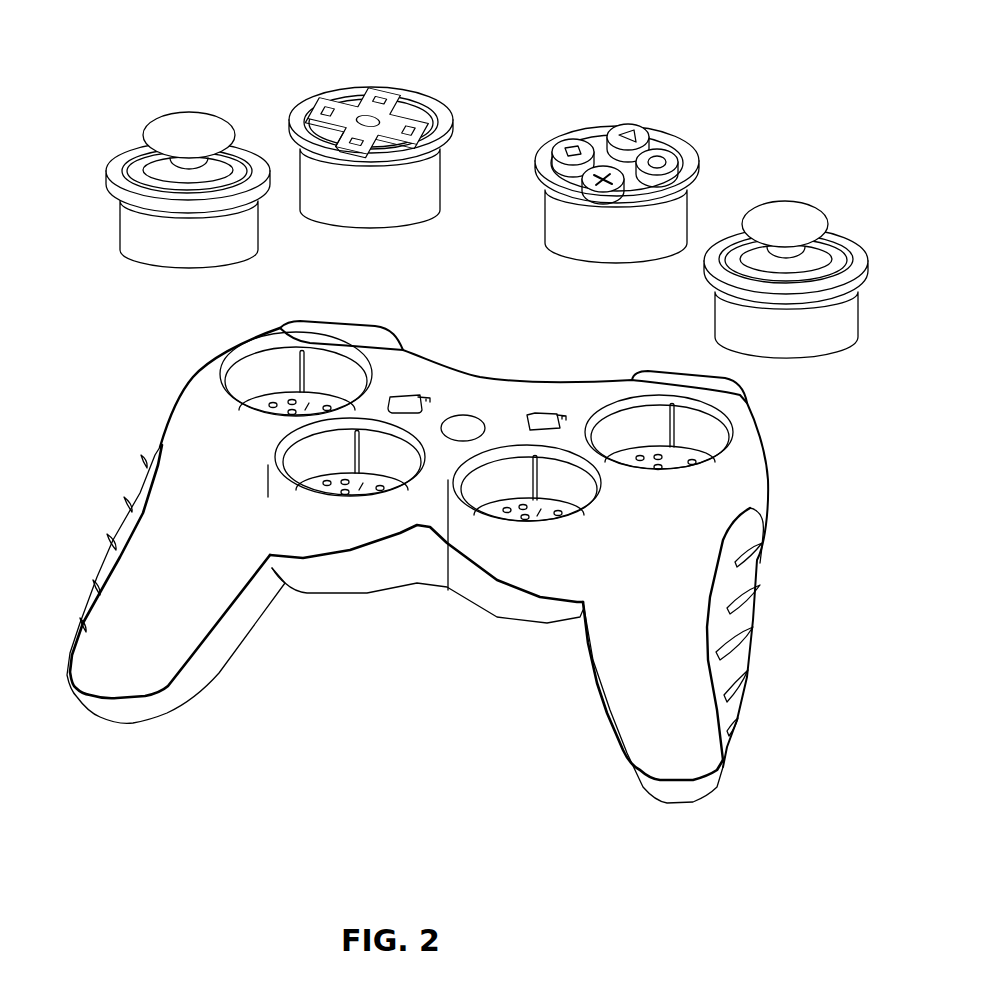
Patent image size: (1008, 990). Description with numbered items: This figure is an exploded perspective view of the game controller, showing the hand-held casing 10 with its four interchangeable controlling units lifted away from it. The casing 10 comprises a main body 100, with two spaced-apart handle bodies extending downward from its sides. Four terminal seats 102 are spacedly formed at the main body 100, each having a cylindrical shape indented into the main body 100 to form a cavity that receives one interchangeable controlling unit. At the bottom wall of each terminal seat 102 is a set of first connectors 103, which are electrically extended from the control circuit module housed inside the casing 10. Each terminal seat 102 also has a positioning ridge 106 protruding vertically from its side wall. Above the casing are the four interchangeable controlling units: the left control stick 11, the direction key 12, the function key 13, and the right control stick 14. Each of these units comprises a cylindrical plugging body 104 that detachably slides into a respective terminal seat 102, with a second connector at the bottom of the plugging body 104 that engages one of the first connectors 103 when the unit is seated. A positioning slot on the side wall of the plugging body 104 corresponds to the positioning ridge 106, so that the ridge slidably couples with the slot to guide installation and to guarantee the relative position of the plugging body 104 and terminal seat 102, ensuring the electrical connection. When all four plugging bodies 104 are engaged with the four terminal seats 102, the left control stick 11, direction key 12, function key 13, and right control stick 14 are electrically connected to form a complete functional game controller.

The casing 10 is at (770, 485).
The main body 100 is at (532, 398).
The terminal seat 102 is at (230, 378).
The first connector 103 is at (287, 407).
The plugging body 104 is at (258, 225).
The positioning ridge 106 is at (301, 352).
The left control stick 11 is at (205, 112).
The direction key 12 is at (395, 88).
The function key 13 is at (640, 127).
The right control stick 14 is at (800, 200).